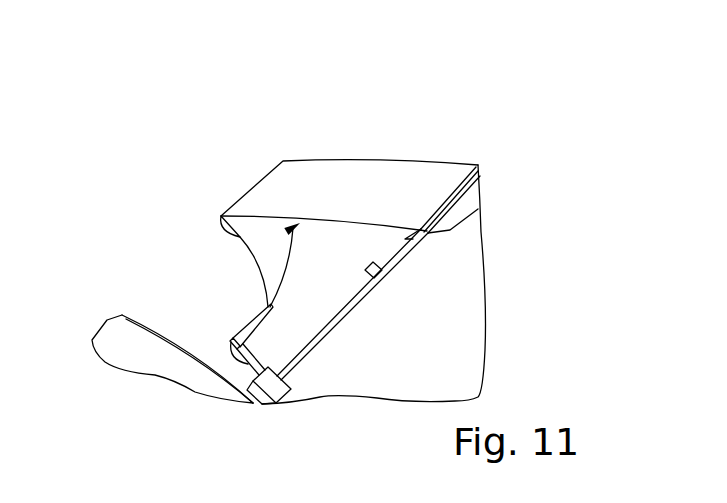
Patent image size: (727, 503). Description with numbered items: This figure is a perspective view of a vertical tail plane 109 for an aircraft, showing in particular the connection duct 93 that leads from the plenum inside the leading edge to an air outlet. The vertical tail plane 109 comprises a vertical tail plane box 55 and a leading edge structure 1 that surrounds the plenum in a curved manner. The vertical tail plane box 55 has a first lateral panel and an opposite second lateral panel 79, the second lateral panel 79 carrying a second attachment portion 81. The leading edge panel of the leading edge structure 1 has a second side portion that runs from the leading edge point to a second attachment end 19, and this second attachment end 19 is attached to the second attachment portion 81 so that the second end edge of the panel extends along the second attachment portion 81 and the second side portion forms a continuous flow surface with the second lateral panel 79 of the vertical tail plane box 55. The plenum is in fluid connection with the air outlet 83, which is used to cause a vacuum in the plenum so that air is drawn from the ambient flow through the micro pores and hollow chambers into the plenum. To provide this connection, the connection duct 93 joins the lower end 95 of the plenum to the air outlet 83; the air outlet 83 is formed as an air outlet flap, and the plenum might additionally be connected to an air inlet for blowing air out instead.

The vertical tail plane 109 is at (192, 177).
The leading edge structure 1 is at (380, 173).
The second attachment end 19 is at (438, 191).
The second lateral panel 79 is at (470, 228).
The second attachment portion 81 is at (453, 221).
The vertical tail plane box 55 is at (440, 325).
The connection duct 93 is at (339, 271).
The air outlet 83 is at (247, 328).
The lower end 95 is at (287, 231).